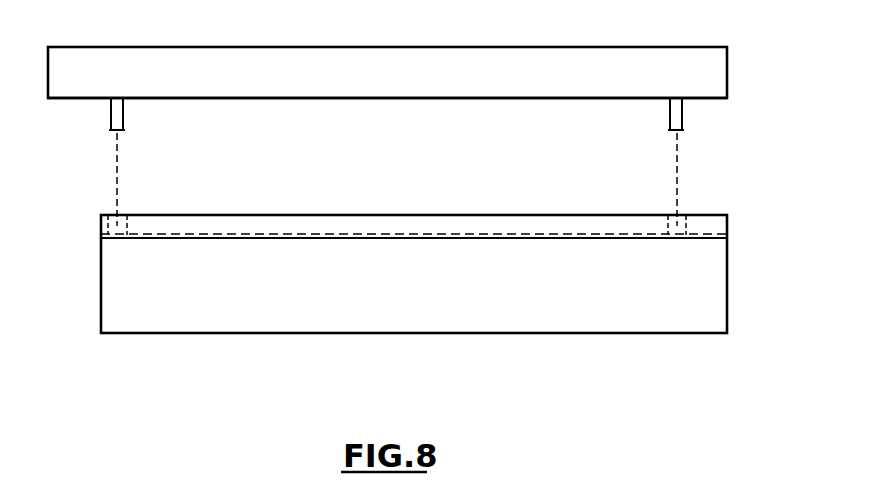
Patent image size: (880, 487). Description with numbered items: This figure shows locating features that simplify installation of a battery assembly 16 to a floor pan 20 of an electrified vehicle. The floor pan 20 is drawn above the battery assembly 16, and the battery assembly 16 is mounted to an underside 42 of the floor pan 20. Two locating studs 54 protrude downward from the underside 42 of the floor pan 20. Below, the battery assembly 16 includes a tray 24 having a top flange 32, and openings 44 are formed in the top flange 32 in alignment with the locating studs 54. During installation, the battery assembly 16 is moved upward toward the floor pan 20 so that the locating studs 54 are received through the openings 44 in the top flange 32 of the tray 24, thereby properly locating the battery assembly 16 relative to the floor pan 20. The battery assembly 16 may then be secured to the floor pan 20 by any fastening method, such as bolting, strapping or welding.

The battery assembly 16 is at (424, 345).
The floor pan 20 is at (400, 54).
The tray 24 is at (196, 325).
The top flange 32 is at (717, 227).
The underside 42 is at (451, 99).
The openings 44 is at (121, 222).
The locating studs 54 is at (124, 115).